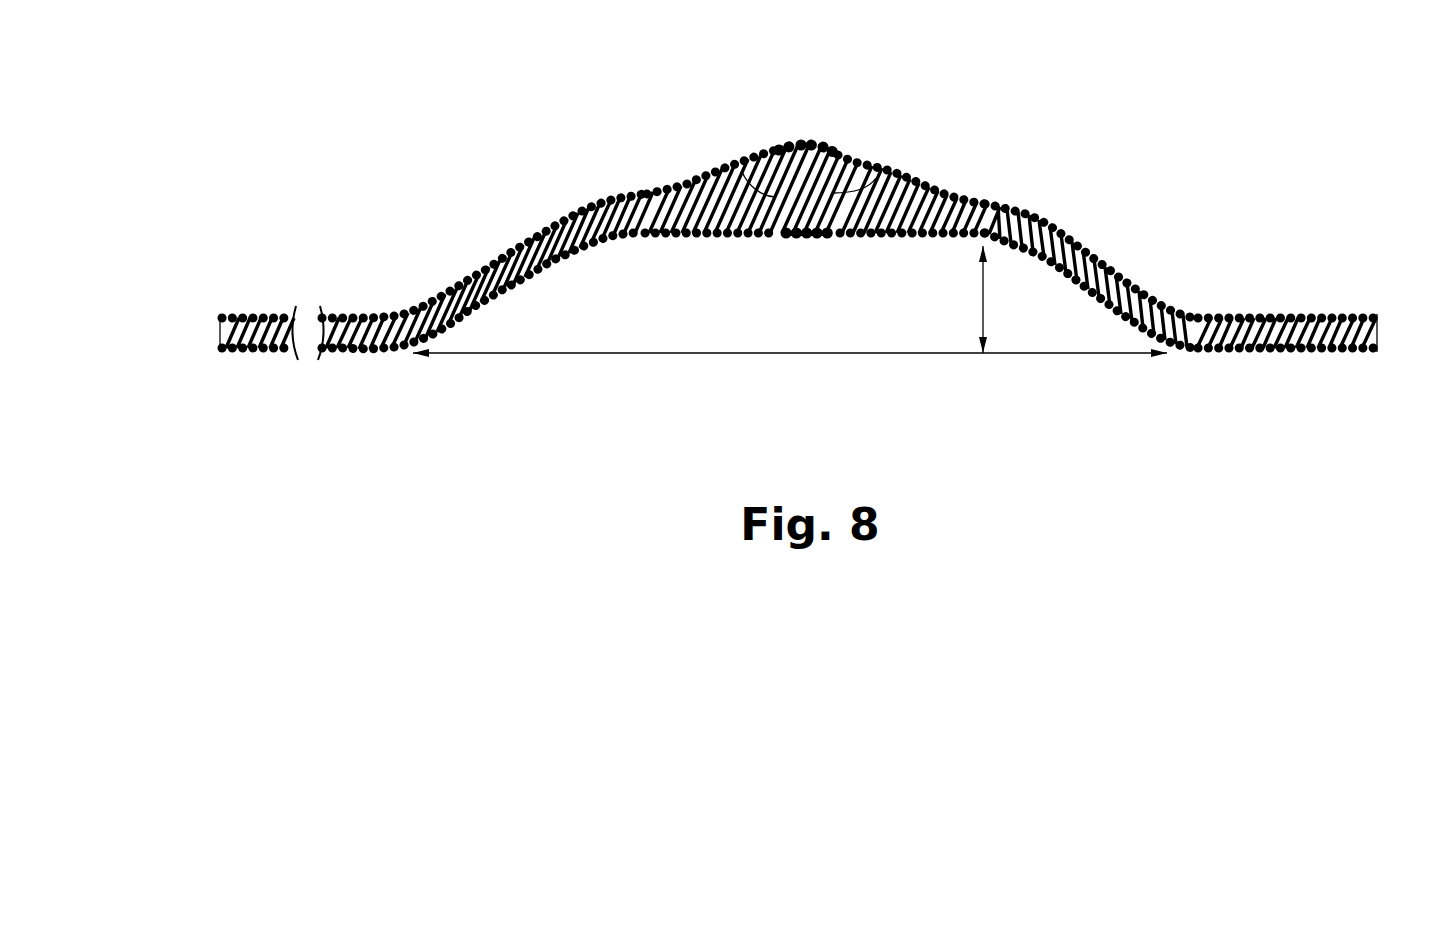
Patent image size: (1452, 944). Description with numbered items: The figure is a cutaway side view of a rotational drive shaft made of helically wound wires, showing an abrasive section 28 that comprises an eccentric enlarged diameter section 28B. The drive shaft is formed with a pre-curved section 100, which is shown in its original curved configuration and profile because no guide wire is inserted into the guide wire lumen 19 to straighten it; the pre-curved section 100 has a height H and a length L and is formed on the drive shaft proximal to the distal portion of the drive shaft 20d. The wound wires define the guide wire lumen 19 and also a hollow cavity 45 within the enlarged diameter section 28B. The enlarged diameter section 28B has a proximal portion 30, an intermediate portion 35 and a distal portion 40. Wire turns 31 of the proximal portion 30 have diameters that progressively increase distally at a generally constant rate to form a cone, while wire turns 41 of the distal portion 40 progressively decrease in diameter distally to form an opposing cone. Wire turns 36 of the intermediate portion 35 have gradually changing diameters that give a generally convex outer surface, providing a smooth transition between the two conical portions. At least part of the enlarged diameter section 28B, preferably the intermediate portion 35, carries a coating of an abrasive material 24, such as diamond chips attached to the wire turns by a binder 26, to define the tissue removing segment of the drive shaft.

The guide wire lumen 19 is at (222, 343).
The pre-curved section 100 is at (427, 417).
The wire turns of the distal portion 41 is at (700, 182).
The abrasive section 28 is at (797, 178).
The enlarged diameter section 28B is at (937, 86).
The proximal portion 30 is at (645, 251).
The intermediate portion 35 is at (836, 251).
The distal portion 40 is at (972, 251).
The abrasive material 24 is at (782, 149).
The binder 26 is at (802, 142).
The wire turns of the intermediate portion 36 is at (833, 146).
The hollow cavity 45 is at (742, 172).
The wire turns of the proximal portion 31 is at (922, 187).
The distal portion of drive shaft 20d is at (1375, 300).
The length L is at (905, 355).
The height H is at (985, 297).